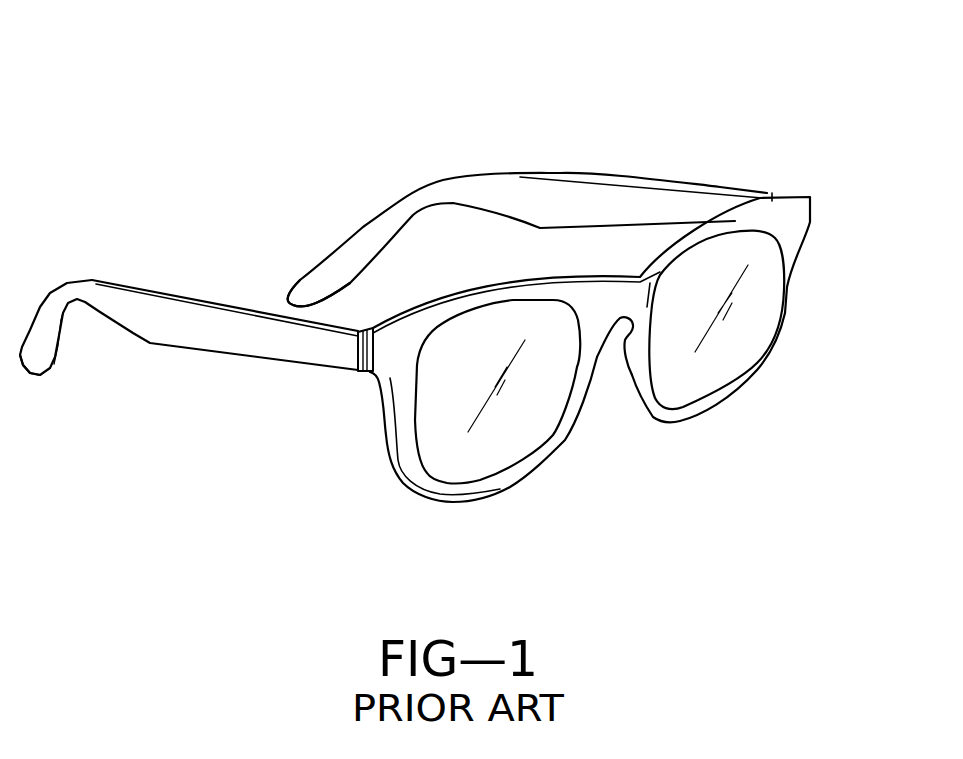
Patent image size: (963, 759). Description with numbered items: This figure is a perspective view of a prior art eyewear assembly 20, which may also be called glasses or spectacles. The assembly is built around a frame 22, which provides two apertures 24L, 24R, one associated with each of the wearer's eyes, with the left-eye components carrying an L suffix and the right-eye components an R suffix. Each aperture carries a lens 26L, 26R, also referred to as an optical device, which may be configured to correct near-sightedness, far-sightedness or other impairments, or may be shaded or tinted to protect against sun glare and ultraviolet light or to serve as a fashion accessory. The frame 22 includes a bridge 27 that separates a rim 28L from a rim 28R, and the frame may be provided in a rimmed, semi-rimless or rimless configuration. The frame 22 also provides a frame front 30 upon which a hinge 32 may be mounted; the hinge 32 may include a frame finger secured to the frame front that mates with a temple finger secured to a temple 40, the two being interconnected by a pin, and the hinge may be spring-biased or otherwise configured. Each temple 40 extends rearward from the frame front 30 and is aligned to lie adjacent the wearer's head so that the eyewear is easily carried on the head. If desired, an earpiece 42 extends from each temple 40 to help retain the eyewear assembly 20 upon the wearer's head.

The eyewear assembly 20 is at (377, 109).
The frame 22 is at (820, 200).
The aperture 24L is at (752, 335).
The aperture 24R is at (455, 460).
The lens 26L is at (683, 383).
The lens 26R is at (530, 418).
The bridge 27 is at (633, 297).
The rim 28L is at (743, 387).
The rim 28R is at (407, 445).
The frame front 30 is at (457, 313).
The hinge 32 is at (773, 192).
The temple 40 is at (590, 193).
The earpiece 42 is at (333, 263).